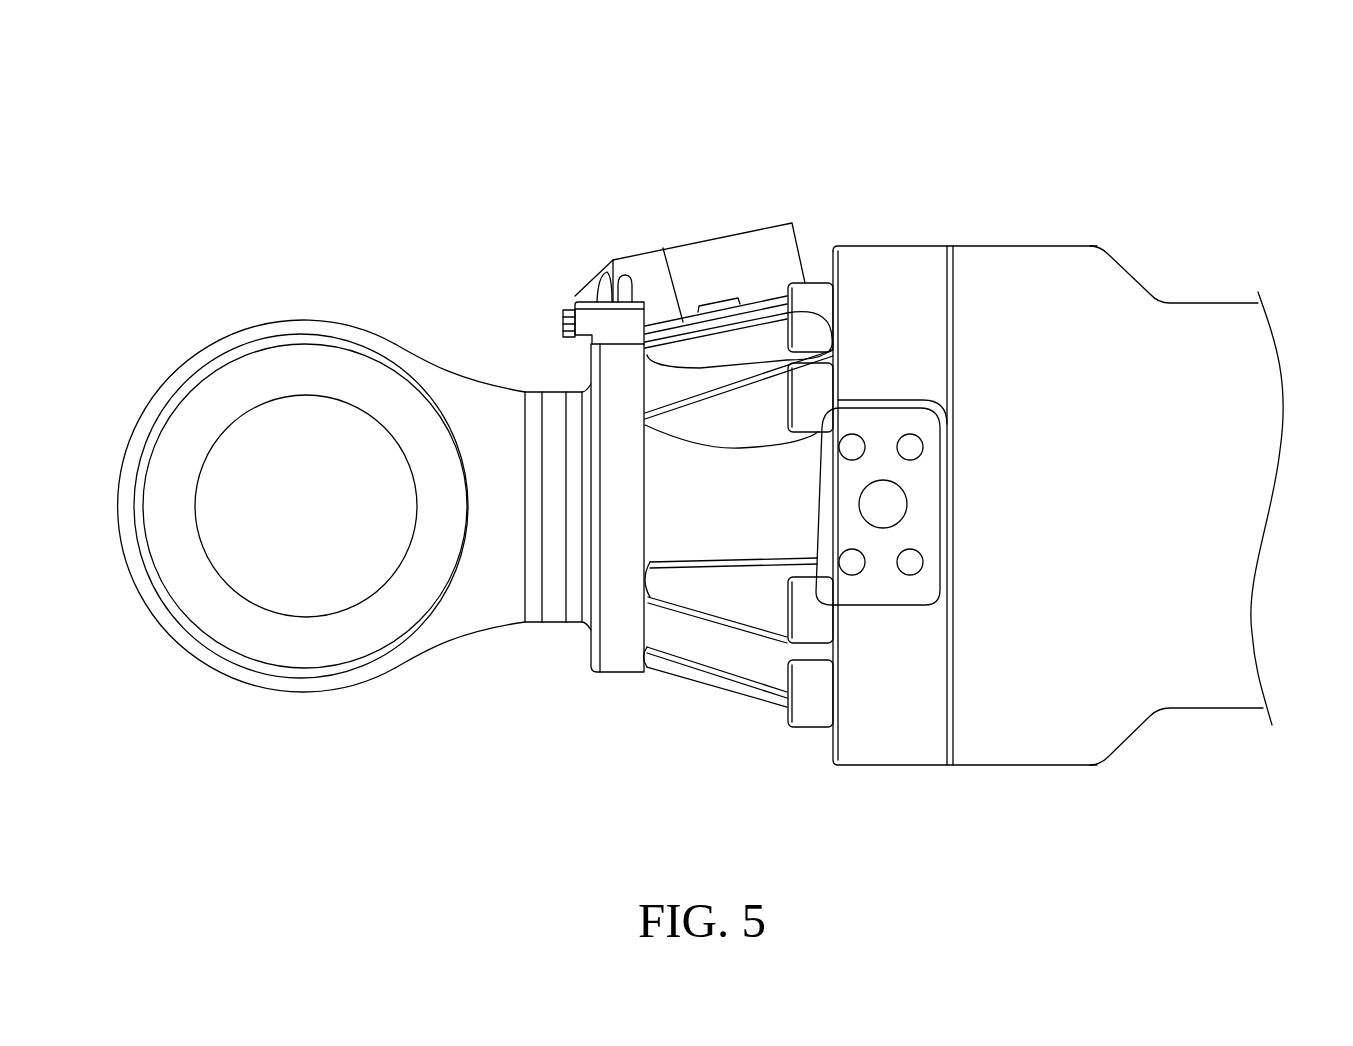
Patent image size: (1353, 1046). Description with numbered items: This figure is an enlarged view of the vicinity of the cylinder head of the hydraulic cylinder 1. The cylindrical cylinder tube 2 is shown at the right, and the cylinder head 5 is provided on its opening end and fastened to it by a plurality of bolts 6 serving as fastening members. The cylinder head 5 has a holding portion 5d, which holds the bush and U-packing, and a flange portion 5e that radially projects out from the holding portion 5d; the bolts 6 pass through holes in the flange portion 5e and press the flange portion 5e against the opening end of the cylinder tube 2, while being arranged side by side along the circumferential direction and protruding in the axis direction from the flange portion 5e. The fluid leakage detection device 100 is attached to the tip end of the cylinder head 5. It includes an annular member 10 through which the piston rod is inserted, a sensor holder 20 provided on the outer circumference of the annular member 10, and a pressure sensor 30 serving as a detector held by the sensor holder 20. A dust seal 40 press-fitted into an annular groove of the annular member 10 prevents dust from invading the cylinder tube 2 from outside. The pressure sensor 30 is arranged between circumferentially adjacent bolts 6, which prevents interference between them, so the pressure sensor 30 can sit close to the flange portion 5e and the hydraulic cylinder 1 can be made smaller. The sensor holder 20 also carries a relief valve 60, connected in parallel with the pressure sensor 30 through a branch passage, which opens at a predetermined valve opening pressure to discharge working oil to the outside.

The hydraulic cylinder 1 is at (328, 233).
The cylinder tube 2 is at (1055, 280).
The cylinder head 5 is at (837, 768).
The holding portion 5d is at (672, 625).
The flange portion 5e is at (892, 740).
The bolts 6 is at (808, 403).
The annular member 10 is at (618, 648).
The sensor holder 20 is at (602, 322).
The pressure sensor 30 is at (713, 257).
The dust seal 40 is at (588, 612).
The relief valve 60 is at (563, 322).
The fluid leakage detection device 100 is at (663, 245).